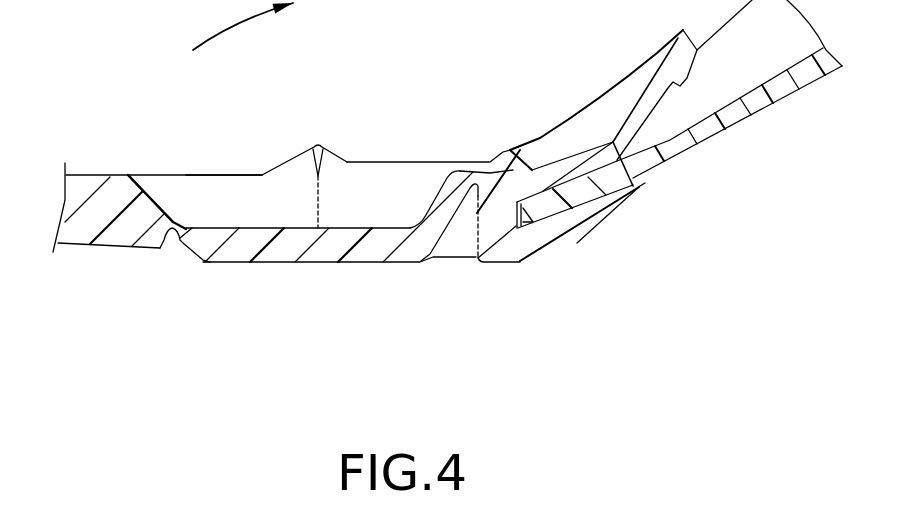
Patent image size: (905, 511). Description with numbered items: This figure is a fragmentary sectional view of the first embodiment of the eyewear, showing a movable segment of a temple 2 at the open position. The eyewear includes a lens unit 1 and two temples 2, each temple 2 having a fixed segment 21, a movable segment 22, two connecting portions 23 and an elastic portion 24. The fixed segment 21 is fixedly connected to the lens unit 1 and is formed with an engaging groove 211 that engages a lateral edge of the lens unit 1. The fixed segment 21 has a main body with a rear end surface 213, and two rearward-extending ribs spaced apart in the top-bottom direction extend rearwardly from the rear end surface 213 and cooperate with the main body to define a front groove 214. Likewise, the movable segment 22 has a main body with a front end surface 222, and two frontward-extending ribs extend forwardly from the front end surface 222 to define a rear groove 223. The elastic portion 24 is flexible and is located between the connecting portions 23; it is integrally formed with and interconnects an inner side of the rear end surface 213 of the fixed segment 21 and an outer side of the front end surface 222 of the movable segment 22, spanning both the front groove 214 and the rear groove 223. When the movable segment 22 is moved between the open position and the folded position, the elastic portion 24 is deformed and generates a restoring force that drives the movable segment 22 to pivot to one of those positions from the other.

The lens unit 1 is at (763, 120).
The temple 2 is at (386, 208).
The fixed segment 21 is at (562, 240).
The engaging groove 211 is at (604, 212).
The rear end surface 213 is at (497, 220).
The front groove 214 is at (457, 242).
The movable segment 22 is at (82, 227).
The front end surface 222 is at (155, 193).
The rear groove 223 is at (190, 200).
The connecting portion 23 is at (320, 148).
The elastic portion 24 is at (238, 240).